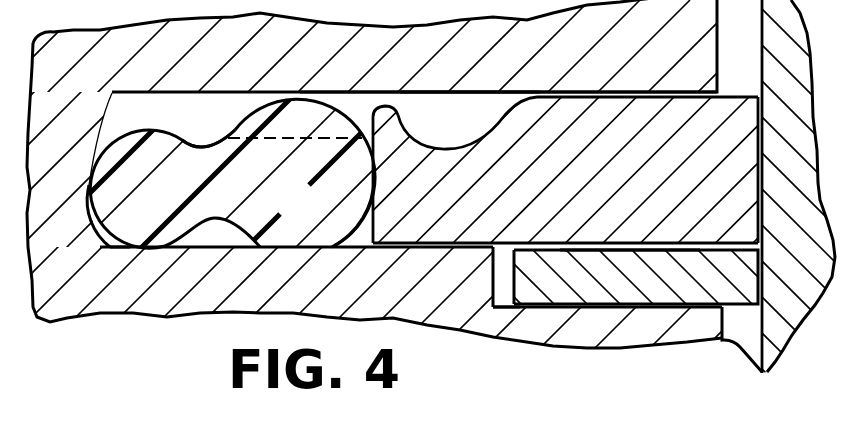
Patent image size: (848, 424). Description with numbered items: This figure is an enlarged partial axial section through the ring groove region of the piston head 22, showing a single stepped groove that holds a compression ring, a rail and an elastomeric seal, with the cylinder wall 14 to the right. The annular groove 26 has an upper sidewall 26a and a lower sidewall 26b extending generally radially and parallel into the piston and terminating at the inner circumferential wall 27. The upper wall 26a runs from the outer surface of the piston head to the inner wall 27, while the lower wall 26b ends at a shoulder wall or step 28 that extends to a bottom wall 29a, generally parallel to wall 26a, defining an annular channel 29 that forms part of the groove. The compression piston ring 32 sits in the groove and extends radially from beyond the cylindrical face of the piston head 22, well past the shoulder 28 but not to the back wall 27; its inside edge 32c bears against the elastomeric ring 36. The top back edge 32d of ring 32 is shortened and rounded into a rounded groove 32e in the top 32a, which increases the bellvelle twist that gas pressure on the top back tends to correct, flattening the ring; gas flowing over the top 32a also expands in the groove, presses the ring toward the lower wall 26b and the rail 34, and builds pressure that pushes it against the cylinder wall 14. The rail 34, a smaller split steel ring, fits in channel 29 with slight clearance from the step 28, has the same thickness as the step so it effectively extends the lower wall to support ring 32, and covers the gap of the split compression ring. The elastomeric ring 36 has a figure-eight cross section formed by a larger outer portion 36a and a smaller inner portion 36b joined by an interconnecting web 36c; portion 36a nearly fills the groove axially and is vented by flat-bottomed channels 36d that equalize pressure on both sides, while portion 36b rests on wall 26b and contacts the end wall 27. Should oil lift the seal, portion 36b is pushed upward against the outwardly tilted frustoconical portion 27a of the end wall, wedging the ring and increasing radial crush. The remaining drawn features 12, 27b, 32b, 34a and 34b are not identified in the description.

The cylinder wall 12 is at (700, 45).
The cylinder wall 14 is at (762, 27).
The piston head 22 is at (664, 56).
The annular groove 26 is at (516, 101).
The upper sidewall 26a is at (455, 97).
The lower sidewall 26b is at (355, 252).
The inner circumferential wall 27 is at (84, 254).
The frustoconical portion of end wall 27a is at (101, 124).
The lower corner 27b is at (105, 250).
The shoulder wall 28 is at (493, 296).
The annular channel 29 is at (495, 285).
The bottom wall 29a is at (515, 311).
The compression piston ring 32 is at (668, 216).
The top of compression ring 32a is at (601, 98).
The bottom surface 32b is at (528, 243).
The inside edge of compression ring 32c is at (374, 213).
The top back edge 32d is at (397, 111).
The rounded groove 32e is at (467, 143).
The rail 34 is at (695, 298).
The inner face 34a is at (548, 286).
The top face 34b is at (627, 250).
The elastomeric sealing ring 36 is at (313, 209).
The outer ring portion 36a is at (323, 200).
The inner ring portion 36b is at (150, 217).
The interconnecting web 36c is at (198, 147).
The vent channels 36d is at (303, 137).